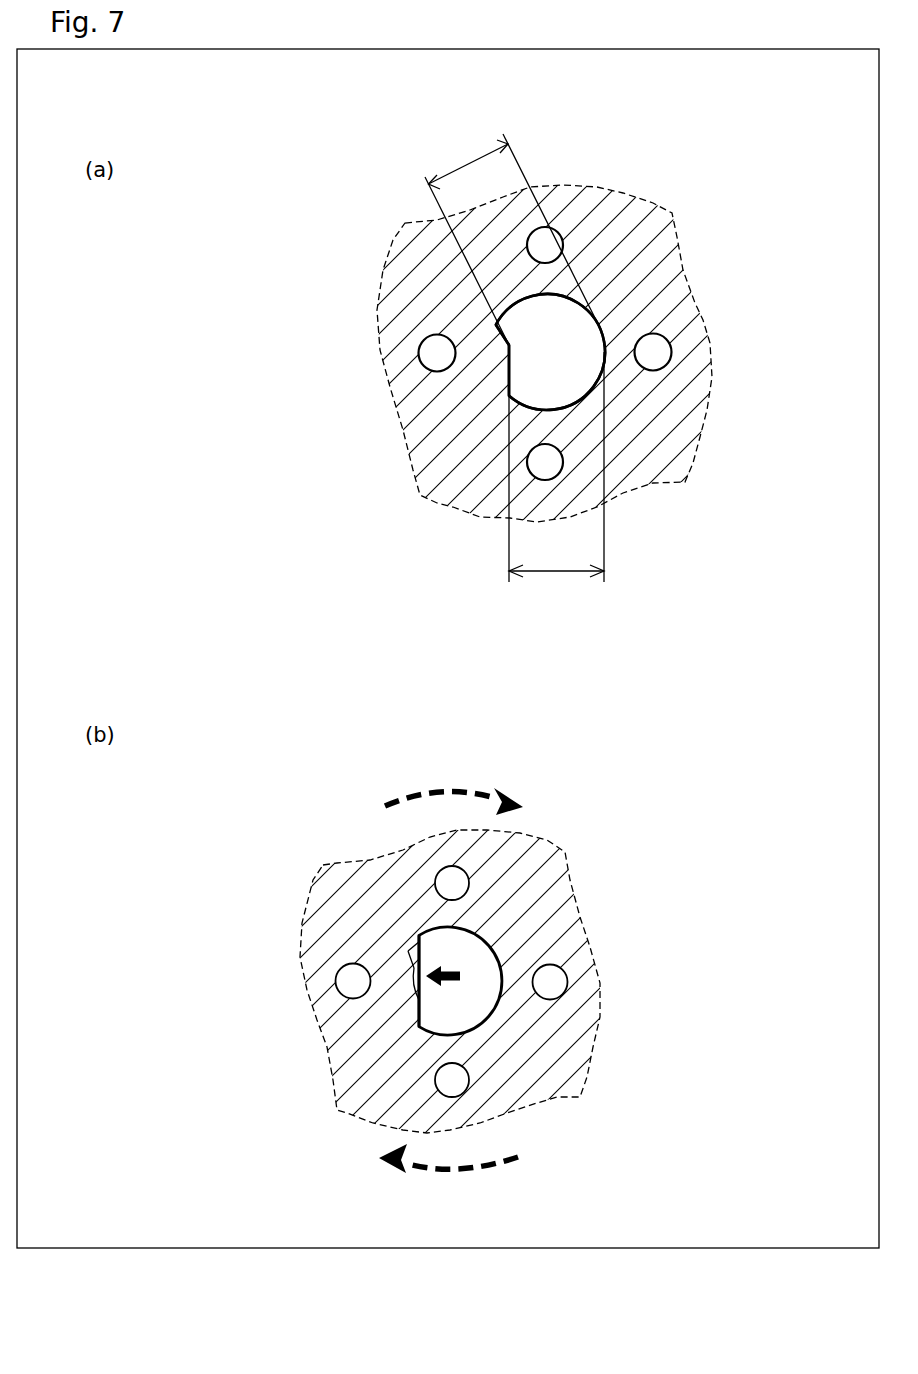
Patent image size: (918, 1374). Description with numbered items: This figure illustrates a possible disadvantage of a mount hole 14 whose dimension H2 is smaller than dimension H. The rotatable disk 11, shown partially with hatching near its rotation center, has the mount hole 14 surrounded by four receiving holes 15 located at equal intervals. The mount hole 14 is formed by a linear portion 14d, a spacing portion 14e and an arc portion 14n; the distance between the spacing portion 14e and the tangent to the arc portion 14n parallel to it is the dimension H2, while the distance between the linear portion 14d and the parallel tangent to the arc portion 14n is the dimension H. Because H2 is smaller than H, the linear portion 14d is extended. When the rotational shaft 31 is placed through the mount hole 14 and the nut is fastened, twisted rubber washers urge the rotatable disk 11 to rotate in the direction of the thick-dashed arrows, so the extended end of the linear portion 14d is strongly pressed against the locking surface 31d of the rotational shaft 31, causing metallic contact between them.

The rotatable disk 11 is at (300, 236).
The mount hole 14 is at (494, 616).
The spacing portion 14e is at (500, 320).
The linear portion 14d is at (507, 380).
The arc portion 14n is at (570, 398).
The receiving holes 15 is at (542, 222).
The rotational shaft 31 is at (543, 1037).
The locking surface 31d is at (421, 990).